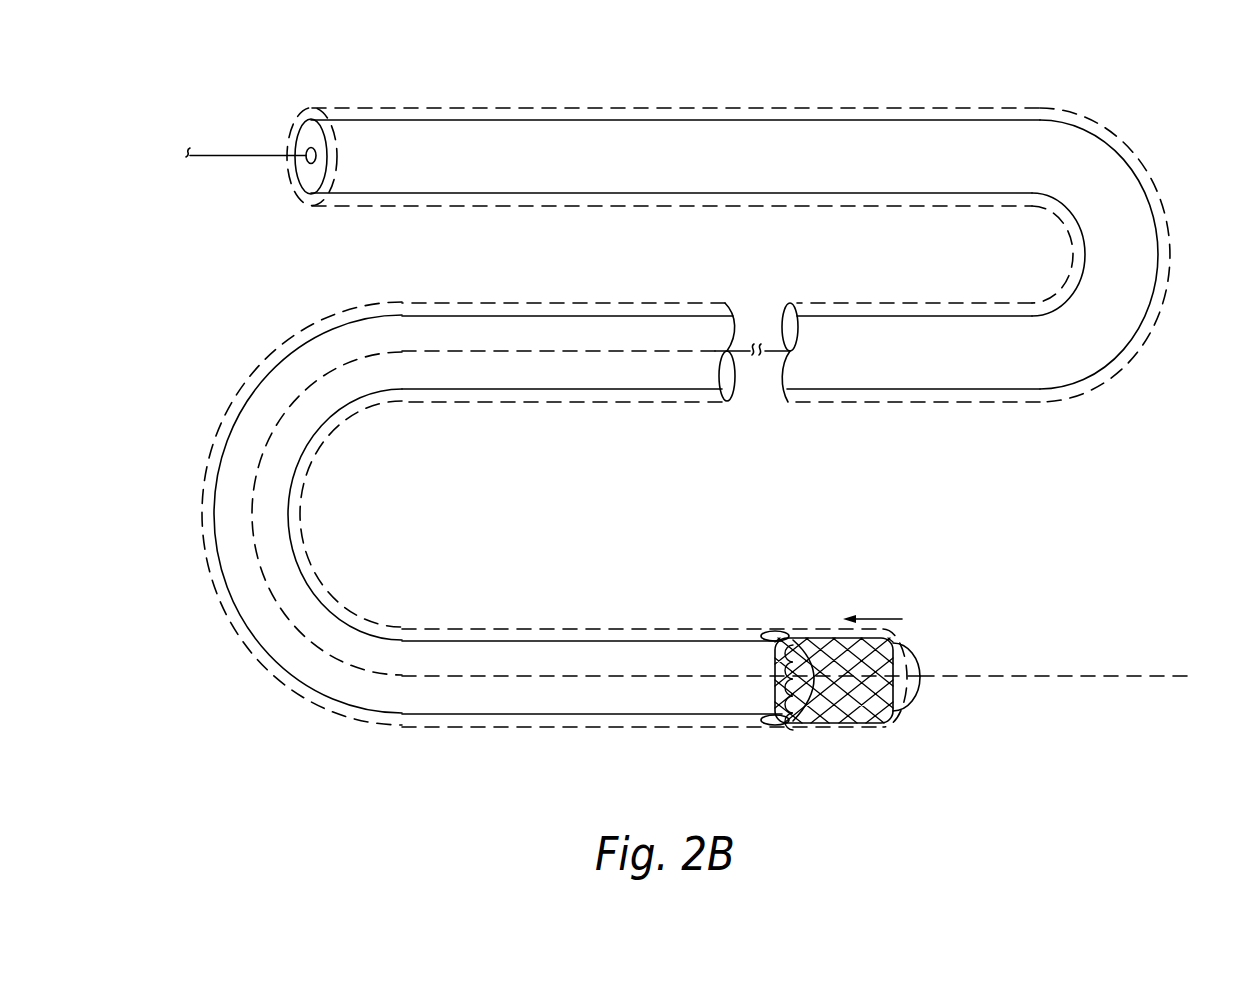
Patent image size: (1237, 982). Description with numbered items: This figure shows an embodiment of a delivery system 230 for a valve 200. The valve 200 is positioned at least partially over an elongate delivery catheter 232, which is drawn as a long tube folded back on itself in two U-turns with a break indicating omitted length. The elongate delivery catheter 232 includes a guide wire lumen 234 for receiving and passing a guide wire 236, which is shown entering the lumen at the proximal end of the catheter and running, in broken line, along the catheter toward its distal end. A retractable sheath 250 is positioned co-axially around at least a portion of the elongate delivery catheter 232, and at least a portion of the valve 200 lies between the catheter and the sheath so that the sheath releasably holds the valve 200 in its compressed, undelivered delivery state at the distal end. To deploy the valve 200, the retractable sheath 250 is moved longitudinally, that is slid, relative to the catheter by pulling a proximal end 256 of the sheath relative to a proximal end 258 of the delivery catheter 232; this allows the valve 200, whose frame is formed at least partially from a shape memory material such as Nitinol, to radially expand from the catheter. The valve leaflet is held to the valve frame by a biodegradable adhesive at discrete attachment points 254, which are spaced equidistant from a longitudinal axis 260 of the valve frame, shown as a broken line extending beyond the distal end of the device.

The valve 200 is at (807, 636).
The system 230 is at (1134, 115).
The elongate delivery catheter 232 is at (1151, 265).
The guide wire lumen 234 is at (306, 163).
The guide wire 236 is at (232, 154).
The retractable sheath 250 is at (670, 107).
The discrete attachment points 254 is at (775, 634).
The proximal end of the sheath 256 is at (302, 92).
The proximal end of the delivery catheter 258 is at (314, 198).
The longitudinal axis 260 is at (955, 676).